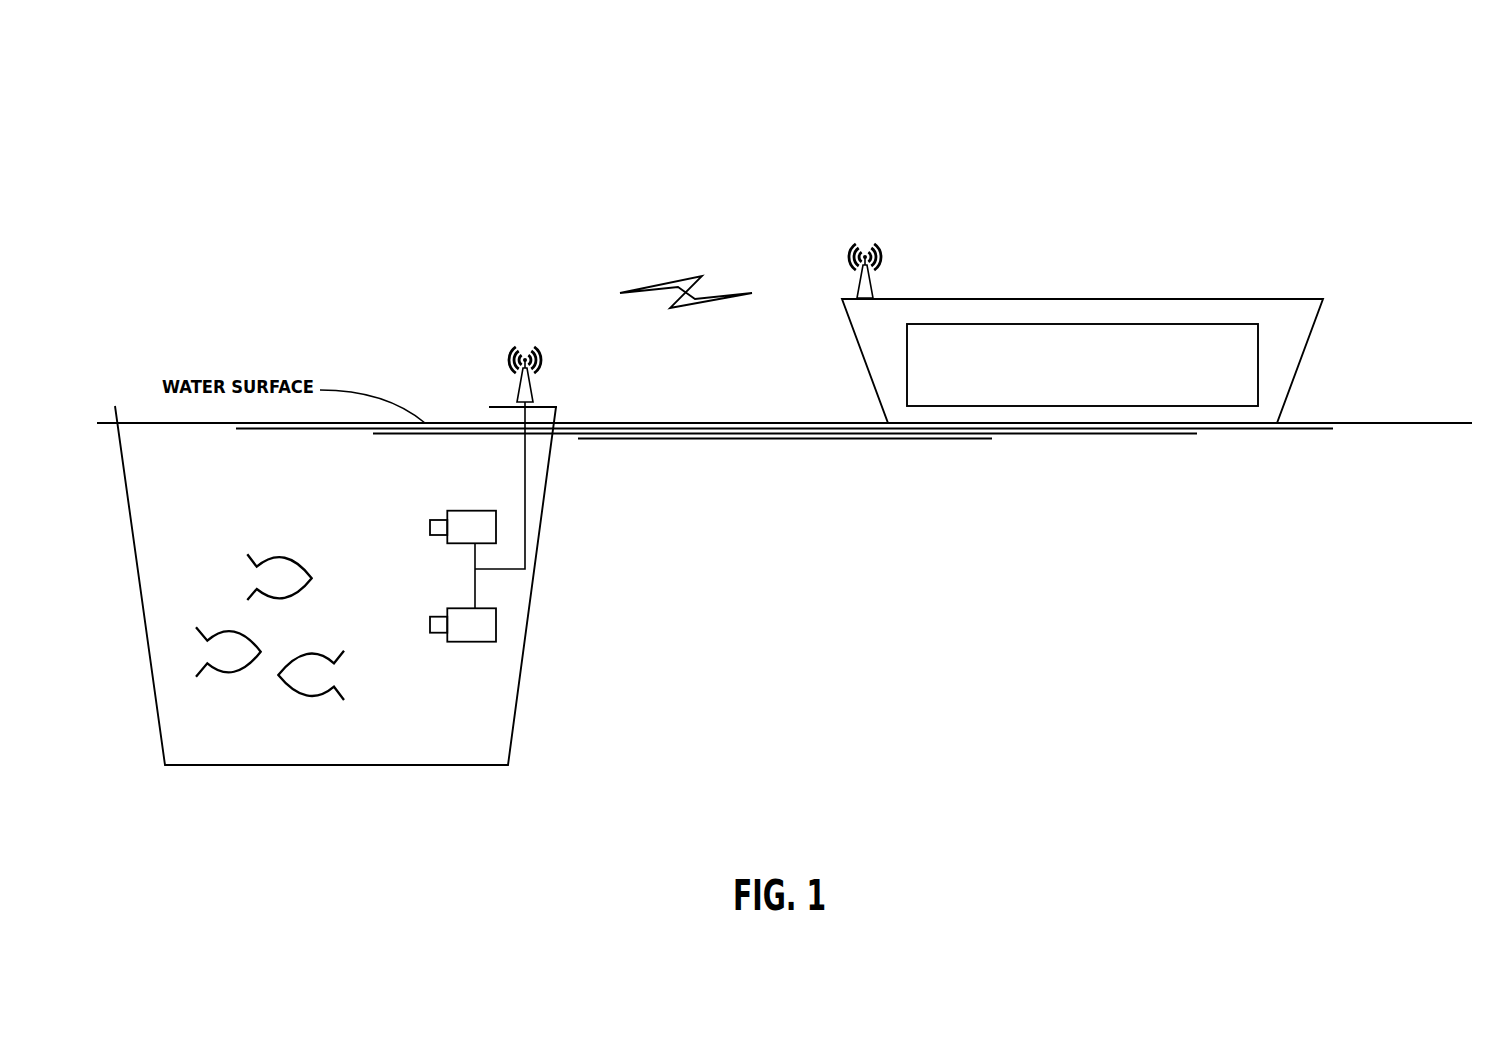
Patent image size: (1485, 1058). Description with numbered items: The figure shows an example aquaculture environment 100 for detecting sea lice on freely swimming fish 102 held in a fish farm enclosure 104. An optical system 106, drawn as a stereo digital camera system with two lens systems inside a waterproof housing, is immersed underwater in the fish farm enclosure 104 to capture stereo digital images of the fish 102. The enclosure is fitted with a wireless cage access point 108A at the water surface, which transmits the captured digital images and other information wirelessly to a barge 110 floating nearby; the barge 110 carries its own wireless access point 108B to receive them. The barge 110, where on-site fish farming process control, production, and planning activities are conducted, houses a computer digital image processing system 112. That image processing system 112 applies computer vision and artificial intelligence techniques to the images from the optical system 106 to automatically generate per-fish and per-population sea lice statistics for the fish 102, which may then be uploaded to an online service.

The aquaculture environment 100 is at (750, 87).
The fish 102 is at (270, 627).
The fish farm enclosure 104 is at (333, 754).
The optical system 106 is at (473, 522).
The wireless cage access point 108A is at (523, 358).
The wireless access point 108B is at (867, 254).
The barge 110 is at (1128, 299).
The computer digital image processing system 112 is at (1230, 376).